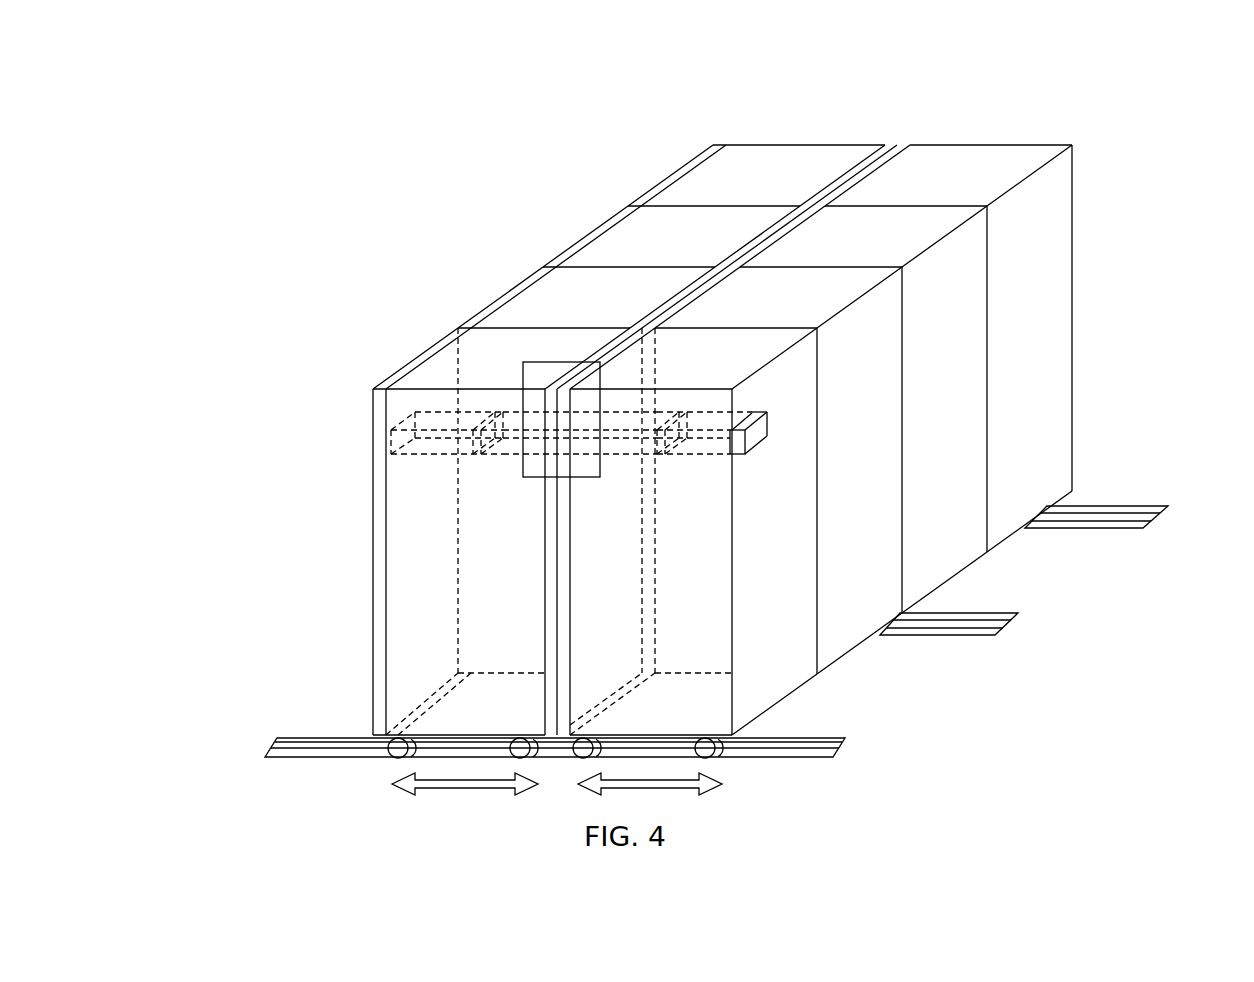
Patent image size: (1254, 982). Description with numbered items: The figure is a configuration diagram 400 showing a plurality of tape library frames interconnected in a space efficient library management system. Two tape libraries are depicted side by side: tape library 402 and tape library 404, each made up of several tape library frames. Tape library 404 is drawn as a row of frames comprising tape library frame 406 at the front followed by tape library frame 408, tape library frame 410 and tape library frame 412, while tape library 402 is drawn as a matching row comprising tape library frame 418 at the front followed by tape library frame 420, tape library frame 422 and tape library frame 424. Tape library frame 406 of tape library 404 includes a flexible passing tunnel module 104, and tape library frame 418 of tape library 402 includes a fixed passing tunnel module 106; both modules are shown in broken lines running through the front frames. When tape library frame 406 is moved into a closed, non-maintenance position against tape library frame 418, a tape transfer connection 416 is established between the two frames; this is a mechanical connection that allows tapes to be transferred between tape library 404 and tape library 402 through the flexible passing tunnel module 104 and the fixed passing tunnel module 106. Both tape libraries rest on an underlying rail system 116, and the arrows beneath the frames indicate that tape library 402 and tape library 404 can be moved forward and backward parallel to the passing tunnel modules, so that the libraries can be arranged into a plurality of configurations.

The configuration diagram 400 is at (253, 117).
The tape library 402 is at (803, 145).
The tape library 404 is at (977, 145).
The tape library frame 406 is at (755, 635).
The tape library frame 408 is at (840, 576).
The tape library frame 410 is at (925, 513).
The tape library frame 412 is at (1012, 450).
The tape transfer connection 416 is at (560, 350).
The tape library frame 418 is at (373, 662).
The tape library frame 420 is at (487, 307).
The tape library frame 422 is at (603, 222).
The tape library frame 424 is at (680, 172).
The flexible passing tunnel module 104 is at (594, 408).
The fixed passing tunnel module 106 is at (682, 464).
The underlying rail system 116 is at (1019, 631).